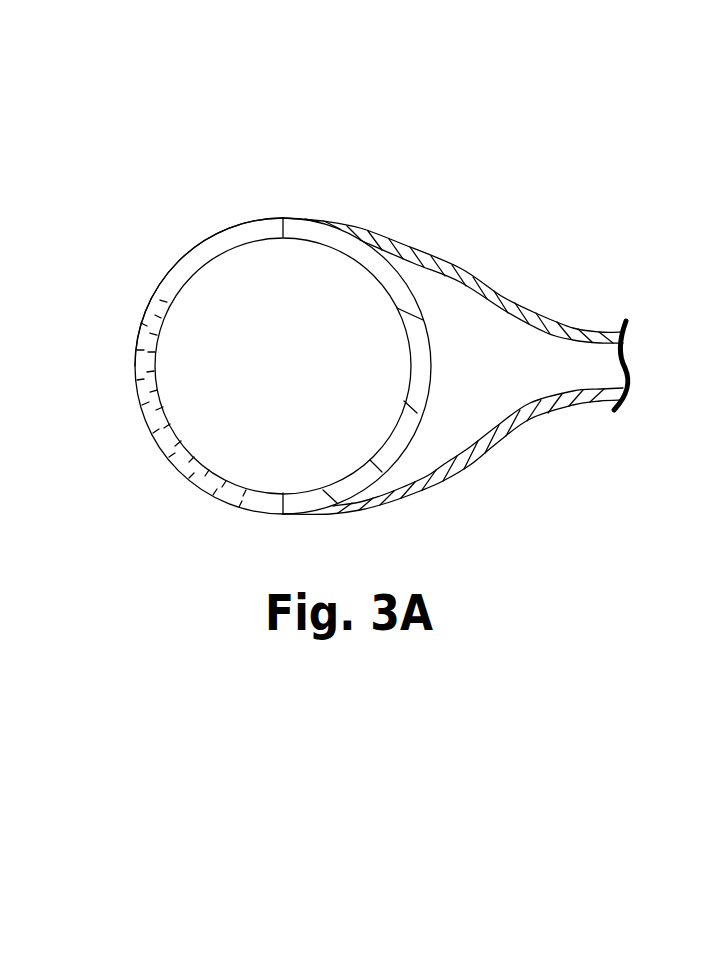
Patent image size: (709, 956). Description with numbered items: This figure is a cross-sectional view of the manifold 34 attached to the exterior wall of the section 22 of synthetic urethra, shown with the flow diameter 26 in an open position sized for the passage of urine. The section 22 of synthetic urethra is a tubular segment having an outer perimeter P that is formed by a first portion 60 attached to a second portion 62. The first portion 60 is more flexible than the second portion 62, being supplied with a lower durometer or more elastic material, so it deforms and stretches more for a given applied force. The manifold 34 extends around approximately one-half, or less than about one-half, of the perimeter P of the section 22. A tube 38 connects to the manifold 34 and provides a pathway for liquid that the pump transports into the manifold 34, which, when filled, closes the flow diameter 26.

The section of synthetic urethra 22 is at (243, 216).
The flow diameter 26 is at (293, 371).
The manifold 34 is at (461, 267).
The tube 38 is at (596, 333).
The first portion 60 is at (403, 434).
The second portion 62 is at (197, 487).
The outer perimeter P is at (137, 343).